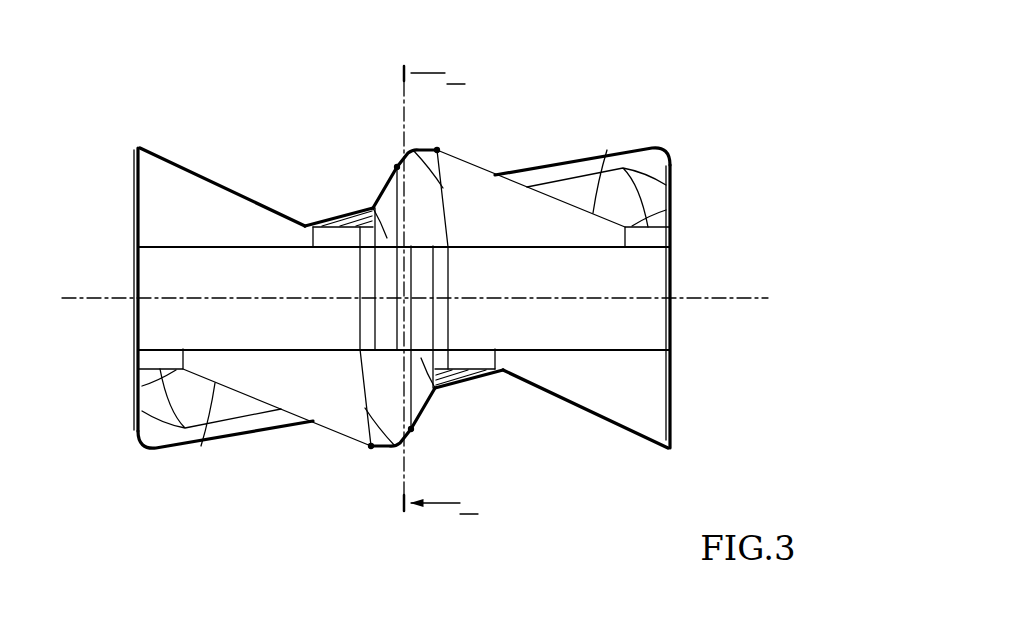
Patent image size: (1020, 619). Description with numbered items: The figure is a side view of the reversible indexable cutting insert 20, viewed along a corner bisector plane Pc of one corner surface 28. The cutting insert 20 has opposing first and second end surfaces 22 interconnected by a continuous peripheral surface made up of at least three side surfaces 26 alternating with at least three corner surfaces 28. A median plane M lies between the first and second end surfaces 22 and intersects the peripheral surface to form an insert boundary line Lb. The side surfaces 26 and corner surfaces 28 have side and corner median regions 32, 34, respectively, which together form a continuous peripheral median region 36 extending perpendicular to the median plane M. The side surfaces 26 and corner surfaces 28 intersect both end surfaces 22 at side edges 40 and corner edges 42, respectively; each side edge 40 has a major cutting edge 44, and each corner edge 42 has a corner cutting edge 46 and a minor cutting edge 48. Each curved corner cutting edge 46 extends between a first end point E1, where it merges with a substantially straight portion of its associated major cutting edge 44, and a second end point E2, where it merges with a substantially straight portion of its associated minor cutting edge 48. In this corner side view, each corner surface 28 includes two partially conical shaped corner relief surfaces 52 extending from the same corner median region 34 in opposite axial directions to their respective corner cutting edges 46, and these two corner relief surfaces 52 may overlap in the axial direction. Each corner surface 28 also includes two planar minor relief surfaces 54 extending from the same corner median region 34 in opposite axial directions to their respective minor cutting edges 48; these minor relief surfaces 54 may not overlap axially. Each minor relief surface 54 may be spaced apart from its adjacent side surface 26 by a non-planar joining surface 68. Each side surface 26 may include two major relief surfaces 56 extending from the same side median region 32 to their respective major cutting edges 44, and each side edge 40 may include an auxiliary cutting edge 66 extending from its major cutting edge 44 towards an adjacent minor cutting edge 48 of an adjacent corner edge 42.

The cutting insert 20 is at (682, 134).
The first and second end surfaces 22 is at (587, 181).
The side surfaces 26 is at (171, 277).
The corner surfaces 28 is at (374, 284).
The side median region 32 is at (170, 331).
The corner median region 34 is at (424, 315).
The continuous peripheral median region 36 is at (285, 285).
The side edge 40 is at (170, 162).
The corner edge 42 is at (433, 146).
The major cutting edge 44 is at (466, 160).
The corner cutting edge 46 is at (444, 185).
The minor cutting edge 48 is at (388, 182).
The corner relief surfaces 52 is at (413, 241).
The minor relief surfaces 54 is at (388, 222).
The major relief surfaces 56 is at (165, 227).
The auxiliary cutting edge 66 is at (315, 226).
The non-planar joining surface 68 is at (333, 226).
The first end point E1 is at (402, 307).
The second end point E2 is at (403, 301).
The corner bisector plane Pc is at (436, 277).
The median plane M is at (411, 298).
The insert boundary line Lb is at (628, 297).